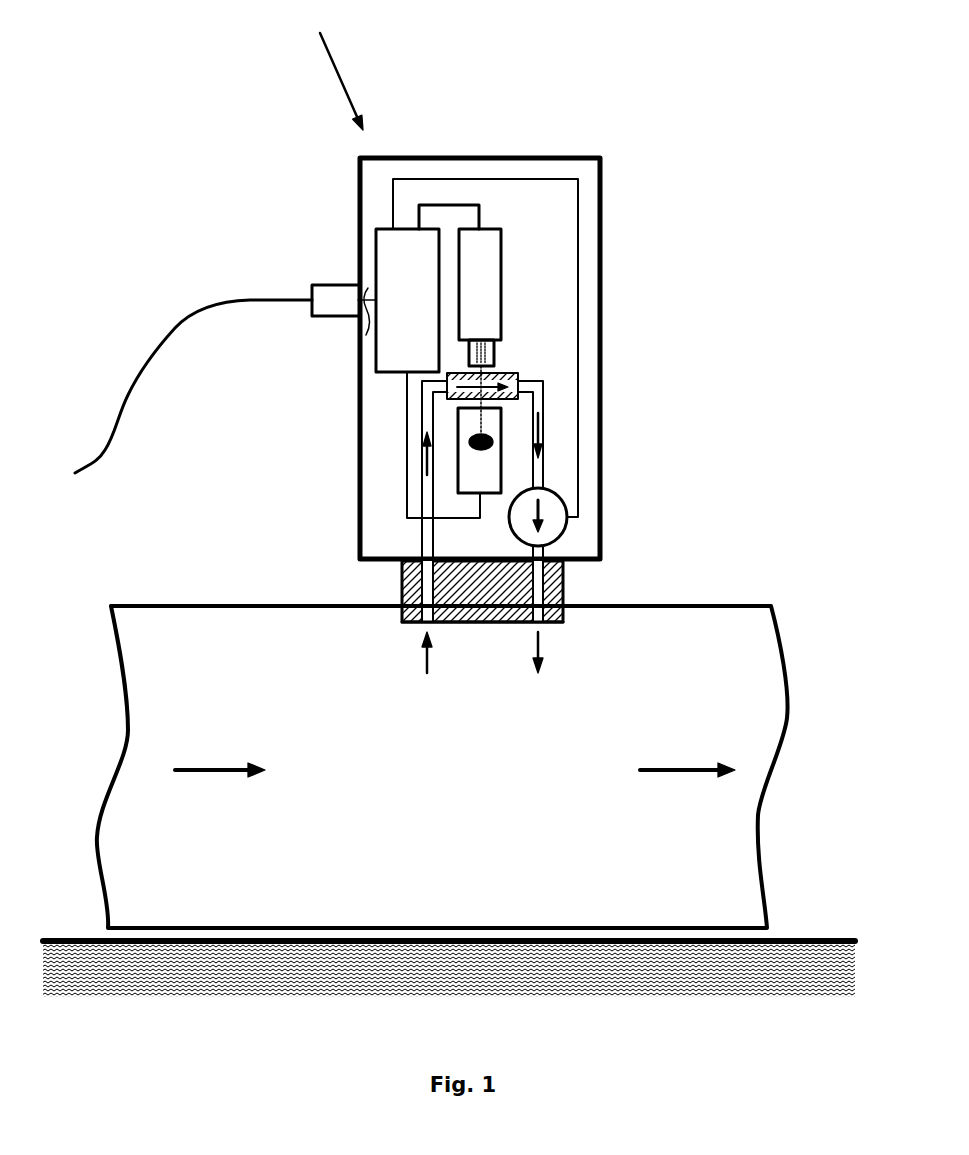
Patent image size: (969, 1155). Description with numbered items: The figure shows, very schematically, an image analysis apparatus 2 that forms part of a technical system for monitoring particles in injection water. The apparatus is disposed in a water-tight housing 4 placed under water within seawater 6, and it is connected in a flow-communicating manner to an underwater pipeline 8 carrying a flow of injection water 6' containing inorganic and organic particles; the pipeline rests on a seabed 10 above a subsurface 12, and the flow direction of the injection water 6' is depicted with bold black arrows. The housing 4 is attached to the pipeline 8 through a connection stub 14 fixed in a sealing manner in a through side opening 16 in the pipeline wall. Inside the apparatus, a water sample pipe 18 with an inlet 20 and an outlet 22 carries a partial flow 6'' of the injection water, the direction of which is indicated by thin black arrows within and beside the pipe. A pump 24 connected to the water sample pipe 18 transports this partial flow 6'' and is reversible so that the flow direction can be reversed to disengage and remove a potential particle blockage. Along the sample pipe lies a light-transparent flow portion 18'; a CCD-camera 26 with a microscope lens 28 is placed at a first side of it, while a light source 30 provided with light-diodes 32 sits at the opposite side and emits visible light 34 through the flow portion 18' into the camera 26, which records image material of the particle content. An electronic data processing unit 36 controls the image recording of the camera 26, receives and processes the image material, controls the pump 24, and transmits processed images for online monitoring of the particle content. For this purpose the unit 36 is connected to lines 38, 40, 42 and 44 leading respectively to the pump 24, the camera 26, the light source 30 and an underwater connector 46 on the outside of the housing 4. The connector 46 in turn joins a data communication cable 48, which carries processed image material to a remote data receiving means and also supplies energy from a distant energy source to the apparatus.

The image analysis apparatus 2 is at (334, 68).
The water-tight housing 4 is at (590, 157).
The seawater 6 is at (472, 440).
The injection water 6' is at (455, 772).
The partial flow 6'' is at (475, 566).
The underwater pipeline 8 is at (205, 604).
The seabed 10 is at (797, 936).
The subsurface 12 is at (696, 986).
The connection stub 14 is at (563, 584).
The through side opening 16 is at (410, 622).
The water sample pipe 18 is at (482, 497).
The light-transparent flow portion 18' is at (523, 386).
The inlet 20 is at (424, 623).
The outlet 22 is at (540, 625).
The pump 24 is at (566, 520).
The CCD-camera 26 is at (490, 252).
The microscope lens 28 is at (497, 357).
The light source 30 is at (487, 480).
The light-diodes 32 is at (494, 444).
The visible light 34 is at (478, 355).
The electronic data processing unit 36 is at (393, 256).
The line 38 is at (573, 207).
The line 40 is at (463, 212).
The line 42 is at (410, 412).
The line 44 is at (366, 335).
The underwater connector 46 is at (325, 295).
The data communication cable 48 is at (187, 318).